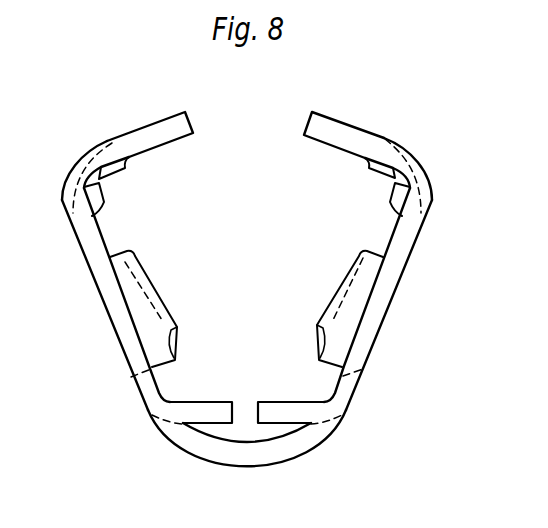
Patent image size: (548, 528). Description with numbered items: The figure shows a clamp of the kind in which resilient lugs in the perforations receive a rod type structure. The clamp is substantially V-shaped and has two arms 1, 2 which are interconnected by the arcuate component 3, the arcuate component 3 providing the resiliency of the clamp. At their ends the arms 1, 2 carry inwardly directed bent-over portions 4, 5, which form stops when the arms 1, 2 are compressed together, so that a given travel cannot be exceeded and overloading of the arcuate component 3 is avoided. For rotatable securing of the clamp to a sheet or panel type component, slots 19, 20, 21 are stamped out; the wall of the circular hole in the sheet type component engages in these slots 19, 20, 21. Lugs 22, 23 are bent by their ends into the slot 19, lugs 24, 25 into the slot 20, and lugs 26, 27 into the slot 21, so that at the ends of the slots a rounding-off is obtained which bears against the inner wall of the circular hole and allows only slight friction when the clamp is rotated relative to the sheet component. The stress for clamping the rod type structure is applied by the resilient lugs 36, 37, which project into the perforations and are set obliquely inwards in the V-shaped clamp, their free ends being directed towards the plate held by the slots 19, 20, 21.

The arm 1 is at (132, 352).
The arm 2 is at (367, 334).
The arcuate component 3 is at (267, 451).
The bent-over portion 4 is at (160, 132).
The bent-over portion 5 is at (341, 130).
The slot 19 is at (90, 172).
The slot 20 is at (243, 428).
The slot 21 is at (404, 172).
The lug 22 is at (125, 162).
The lug 23 is at (103, 200).
The lug 24 is at (212, 410).
The lug 25 is at (285, 408).
The lug 26 is at (387, 188).
The lug 27 is at (366, 162).
The resilient lug 36 is at (140, 312).
The resilient lug 37 is at (355, 300).